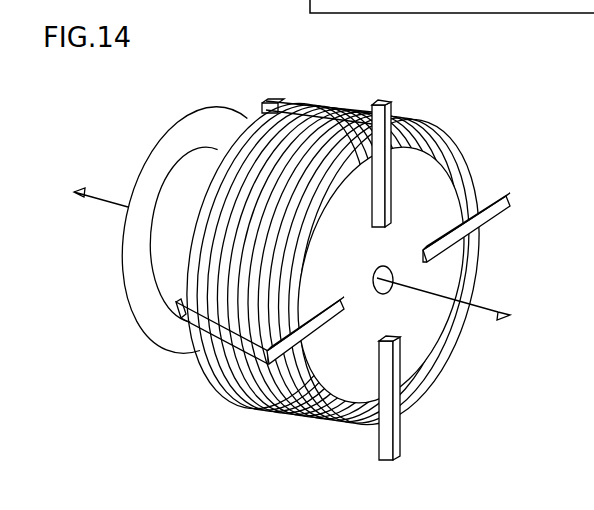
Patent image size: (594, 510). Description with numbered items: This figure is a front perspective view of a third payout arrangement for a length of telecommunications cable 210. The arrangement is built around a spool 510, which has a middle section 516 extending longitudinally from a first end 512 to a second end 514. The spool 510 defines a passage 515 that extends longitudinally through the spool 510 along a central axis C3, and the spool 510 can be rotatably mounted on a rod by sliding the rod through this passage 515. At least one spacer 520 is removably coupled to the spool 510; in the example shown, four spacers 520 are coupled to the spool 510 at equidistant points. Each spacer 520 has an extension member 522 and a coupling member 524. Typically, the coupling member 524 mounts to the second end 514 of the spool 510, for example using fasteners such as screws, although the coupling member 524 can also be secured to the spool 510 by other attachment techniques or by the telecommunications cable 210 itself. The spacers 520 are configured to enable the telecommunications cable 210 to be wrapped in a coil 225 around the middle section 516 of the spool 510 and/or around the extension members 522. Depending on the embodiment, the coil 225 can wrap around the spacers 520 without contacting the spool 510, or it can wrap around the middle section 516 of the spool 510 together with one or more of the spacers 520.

The telecommunications cable 210 is at (261, 116).
The extension member 522 is at (274, 99).
The coil 225 is at (345, 103).
The coupling member 524 is at (392, 110).
The spool 510 is at (435, 192).
The spacer 520 is at (500, 210).
The middle section 516 is at (170, 225).
The first end 512 is at (137, 277).
The passage 515 is at (388, 290).
The second end 514 is at (415, 352).
The central axis C3 is at (460, 305).